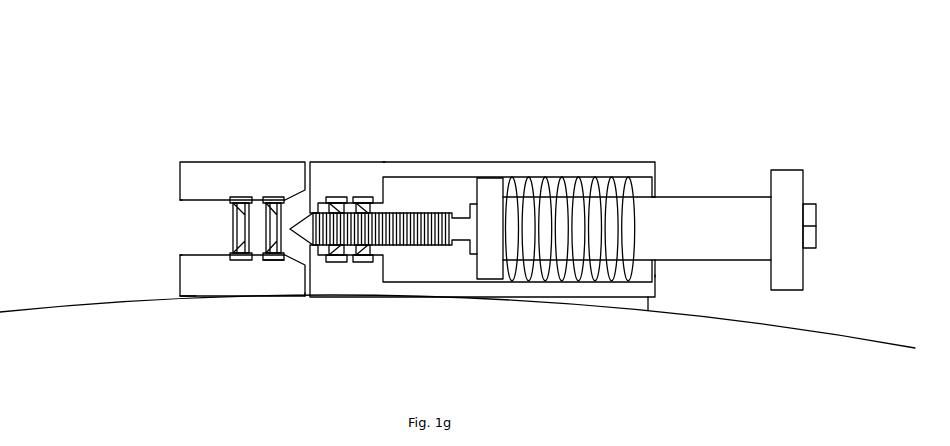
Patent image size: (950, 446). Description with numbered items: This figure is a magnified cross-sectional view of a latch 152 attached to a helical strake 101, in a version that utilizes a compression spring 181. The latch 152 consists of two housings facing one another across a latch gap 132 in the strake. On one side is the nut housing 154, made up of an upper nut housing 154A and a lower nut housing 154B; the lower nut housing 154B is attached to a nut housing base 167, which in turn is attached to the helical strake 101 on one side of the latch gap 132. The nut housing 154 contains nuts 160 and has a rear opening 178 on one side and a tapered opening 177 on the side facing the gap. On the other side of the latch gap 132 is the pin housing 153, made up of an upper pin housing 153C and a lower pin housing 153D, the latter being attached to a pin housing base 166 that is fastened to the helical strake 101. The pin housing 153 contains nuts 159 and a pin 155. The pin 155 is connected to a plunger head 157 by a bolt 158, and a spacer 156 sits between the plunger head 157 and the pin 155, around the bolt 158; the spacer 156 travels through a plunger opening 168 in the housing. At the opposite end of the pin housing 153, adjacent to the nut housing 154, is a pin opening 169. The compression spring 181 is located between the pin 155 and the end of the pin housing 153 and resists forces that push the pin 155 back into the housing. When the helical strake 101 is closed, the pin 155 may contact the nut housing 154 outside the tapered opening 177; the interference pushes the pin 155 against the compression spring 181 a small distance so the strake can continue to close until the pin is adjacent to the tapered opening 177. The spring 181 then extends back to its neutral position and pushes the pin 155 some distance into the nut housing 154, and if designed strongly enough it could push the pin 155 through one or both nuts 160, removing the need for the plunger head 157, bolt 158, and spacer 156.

The helical strake 101 is at (113, 304).
The latch gap 132 is at (303, 298).
The latch 152 is at (106, 84).
The pin housing 153 is at (502, 109).
The upper pin housing 153C is at (383, 162).
The lower pin housing 153D is at (657, 275).
The nut housing 154 is at (162, 236).
The upper nut housing 154A is at (176, 179).
The lower nut housing 154B is at (178, 275).
The pin 155 is at (490, 178).
The spacer 156 is at (710, 197).
The plunger head 157 is at (795, 170).
The bolt 158 is at (818, 224).
The nuts 159 is at (355, 197).
The nuts 160 is at (265, 197).
The pin housing base 166 is at (648, 310).
The nut housing base 167 is at (196, 299).
The plunger opening 168 is at (645, 197).
The pin opening 169 is at (312, 248).
The tapered opening 177 is at (285, 258).
The rear opening 178 is at (176, 209).
The compression spring 181 is at (565, 185).